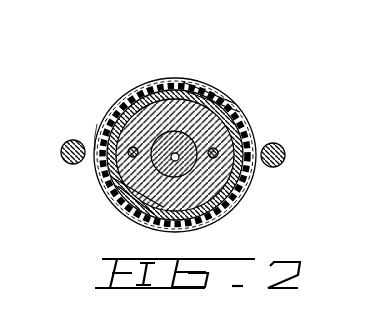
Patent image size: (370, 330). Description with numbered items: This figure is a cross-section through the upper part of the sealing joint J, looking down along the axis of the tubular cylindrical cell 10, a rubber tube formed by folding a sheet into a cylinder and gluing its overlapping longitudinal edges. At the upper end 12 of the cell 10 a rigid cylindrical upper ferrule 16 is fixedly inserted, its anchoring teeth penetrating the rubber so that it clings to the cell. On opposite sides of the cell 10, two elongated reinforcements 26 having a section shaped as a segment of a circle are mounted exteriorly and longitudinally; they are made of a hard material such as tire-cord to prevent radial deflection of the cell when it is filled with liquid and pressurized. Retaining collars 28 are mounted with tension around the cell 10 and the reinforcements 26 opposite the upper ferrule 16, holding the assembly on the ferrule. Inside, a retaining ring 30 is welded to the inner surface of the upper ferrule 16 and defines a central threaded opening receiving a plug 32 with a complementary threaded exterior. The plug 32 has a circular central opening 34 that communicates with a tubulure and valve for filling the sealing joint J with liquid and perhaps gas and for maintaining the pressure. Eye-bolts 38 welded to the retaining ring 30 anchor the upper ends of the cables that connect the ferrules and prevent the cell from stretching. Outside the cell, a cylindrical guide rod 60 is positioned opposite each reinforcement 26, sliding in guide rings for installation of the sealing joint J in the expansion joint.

The tubular cylindrical cell 10 is at (195, 78).
The upper end of the cell 12 is at (200, 229).
The upper ferrule 16 is at (232, 94).
The reinforcements 26 is at (99, 110).
The retaining collars 28 is at (243, 197).
The retaining ring 30 is at (137, 216).
The plug 32 is at (160, 150).
The circular central opening 34 is at (174, 150).
The eye-bolts 38 is at (109, 190).
The guide rod 60 is at (70, 163).
The sealing joint J is at (183, 72).